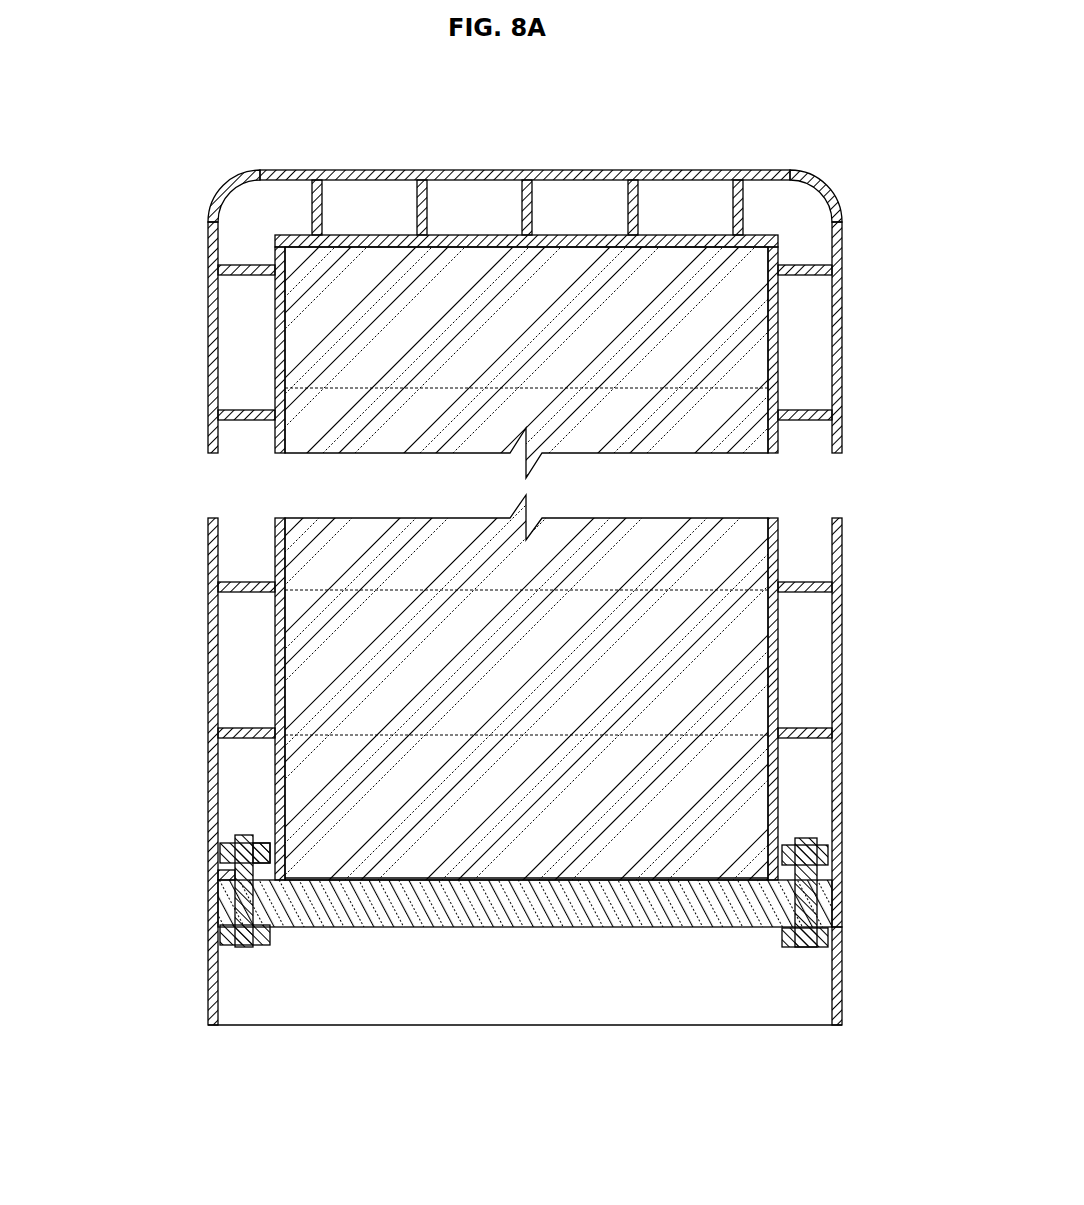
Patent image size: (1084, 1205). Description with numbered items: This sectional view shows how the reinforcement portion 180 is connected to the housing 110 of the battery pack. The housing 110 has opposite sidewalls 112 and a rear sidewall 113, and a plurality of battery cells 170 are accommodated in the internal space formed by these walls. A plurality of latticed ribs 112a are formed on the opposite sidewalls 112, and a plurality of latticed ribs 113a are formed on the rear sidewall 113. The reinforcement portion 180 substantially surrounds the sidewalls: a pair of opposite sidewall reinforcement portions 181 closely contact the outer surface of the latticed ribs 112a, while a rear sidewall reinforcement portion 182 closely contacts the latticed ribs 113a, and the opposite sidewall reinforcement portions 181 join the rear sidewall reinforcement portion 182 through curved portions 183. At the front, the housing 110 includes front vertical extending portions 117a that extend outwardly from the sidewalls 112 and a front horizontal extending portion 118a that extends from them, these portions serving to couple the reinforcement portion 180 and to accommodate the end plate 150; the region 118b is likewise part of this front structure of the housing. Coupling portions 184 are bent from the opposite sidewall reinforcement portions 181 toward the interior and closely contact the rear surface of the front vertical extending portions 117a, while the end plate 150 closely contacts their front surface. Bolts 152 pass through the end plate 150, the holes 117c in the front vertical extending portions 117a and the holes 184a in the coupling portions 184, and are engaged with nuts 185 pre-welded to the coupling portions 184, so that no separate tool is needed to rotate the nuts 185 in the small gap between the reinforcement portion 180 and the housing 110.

The reinforcement portion 180 is at (200, 638).
The opposite sidewall reinforcement portions 181 is at (212, 340).
The rear sidewall reinforcement portion 182 is at (675, 172).
The curved portions 183 is at (228, 188).
The rear sidewall 113 is at (572, 237).
The latticed ribs 113a is at (520, 208).
The sidewalls 112 is at (278, 350).
The latticed ribs 112a is at (256, 412).
The housing 110 is at (780, 698).
The battery cells 170 is at (595, 855).
The end plate 150 is at (710, 900).
The bolts 152 is at (802, 945).
The front vertical extending portions 117a is at (830, 868).
The holes 117c is at (218, 888).
The coupling portions 184 is at (222, 866).
The holes 184a is at (234, 872).
The nuts 185 is at (262, 840).
The front horizontal extending portion 118a is at (840, 958).
The bottom wall 118b is at (470, 985).